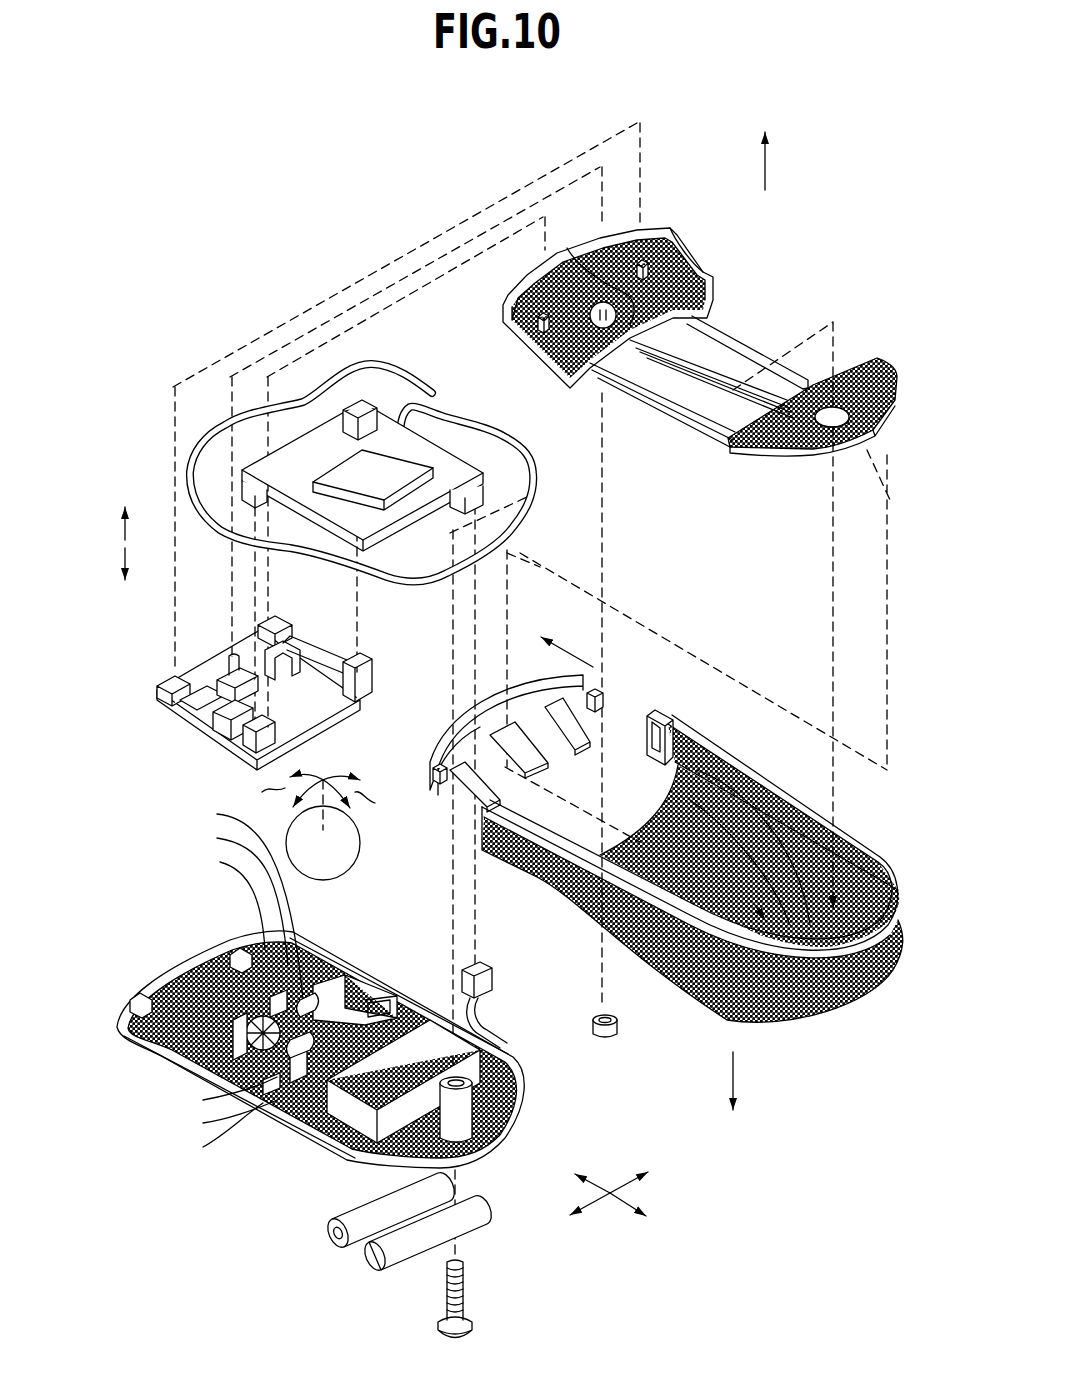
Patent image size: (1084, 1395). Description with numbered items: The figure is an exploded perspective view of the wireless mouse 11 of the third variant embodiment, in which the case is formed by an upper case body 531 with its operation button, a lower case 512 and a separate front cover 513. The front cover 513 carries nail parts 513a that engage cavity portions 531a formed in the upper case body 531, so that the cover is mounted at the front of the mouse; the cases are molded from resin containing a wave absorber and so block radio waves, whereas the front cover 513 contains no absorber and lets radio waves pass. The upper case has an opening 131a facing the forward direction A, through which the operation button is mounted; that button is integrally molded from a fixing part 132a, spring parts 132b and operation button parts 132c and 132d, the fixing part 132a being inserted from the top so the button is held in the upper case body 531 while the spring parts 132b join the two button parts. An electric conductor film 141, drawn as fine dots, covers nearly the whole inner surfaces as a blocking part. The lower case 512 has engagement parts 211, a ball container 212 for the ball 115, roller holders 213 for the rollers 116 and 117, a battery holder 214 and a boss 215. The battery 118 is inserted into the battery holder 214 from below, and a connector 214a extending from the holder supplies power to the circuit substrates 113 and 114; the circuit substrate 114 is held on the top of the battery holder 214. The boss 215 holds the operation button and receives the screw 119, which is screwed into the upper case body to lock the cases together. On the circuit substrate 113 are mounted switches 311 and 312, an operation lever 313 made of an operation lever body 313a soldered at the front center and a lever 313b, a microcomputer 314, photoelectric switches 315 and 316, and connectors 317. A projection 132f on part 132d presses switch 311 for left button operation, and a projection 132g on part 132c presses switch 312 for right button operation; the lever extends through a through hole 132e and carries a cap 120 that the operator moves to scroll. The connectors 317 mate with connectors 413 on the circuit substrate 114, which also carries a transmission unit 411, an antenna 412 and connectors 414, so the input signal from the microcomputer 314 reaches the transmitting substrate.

The wireless mouse 11 is at (135, 177).
The circuit substrate 113 is at (245, 676).
The circuit substrate 114 is at (230, 480).
The ball 115 is at (361, 845).
The roller 116 is at (178, 1120).
The roller 117 is at (147, 797).
The battery 118 is at (355, 1258).
The screw 119 is at (468, 1283).
The cap 120 is at (603, 1040).
The opening 131a is at (705, 767).
The fixing part 132a is at (897, 382).
The spring parts 132b is at (765, 380).
The operation button part 132c is at (560, 387).
The operation button part 132d is at (690, 262).
The through hole 132e is at (622, 333).
The projection 132f is at (662, 265).
The projection 132g is at (503, 325).
The electric conductor film 141 is at (873, 355).
The engagement parts 211 is at (215, 945).
The ball container 212 is at (347, 998).
The roller holders 213 is at (323, 998).
The battery holder 214 is at (478, 1080).
The connector 214a is at (488, 975).
The boss 215 is at (513, 1123).
The switch 311 is at (163, 684).
The switch 312 is at (275, 622).
The operation lever 313 is at (200, 664).
The operation lever body 313a is at (225, 655).
The lever 313b is at (263, 680).
The microcomputer 314 is at (195, 708).
The photoelectric switch 315 is at (225, 735).
The photoelectric switch 316 is at (300, 648).
The connectors 317 is at (275, 742).
The transmission unit 411 is at (350, 470).
The antenna 412 is at (432, 388).
The connectors 413 is at (343, 427).
The connectors 414 is at (510, 465).
The lower case 512 is at (321, 1052).
The front cover 513 is at (509, 700).
The nail parts 513a is at (600, 697).
The upper case body 531 is at (692, 774).
The cavity portions 531a is at (662, 757).